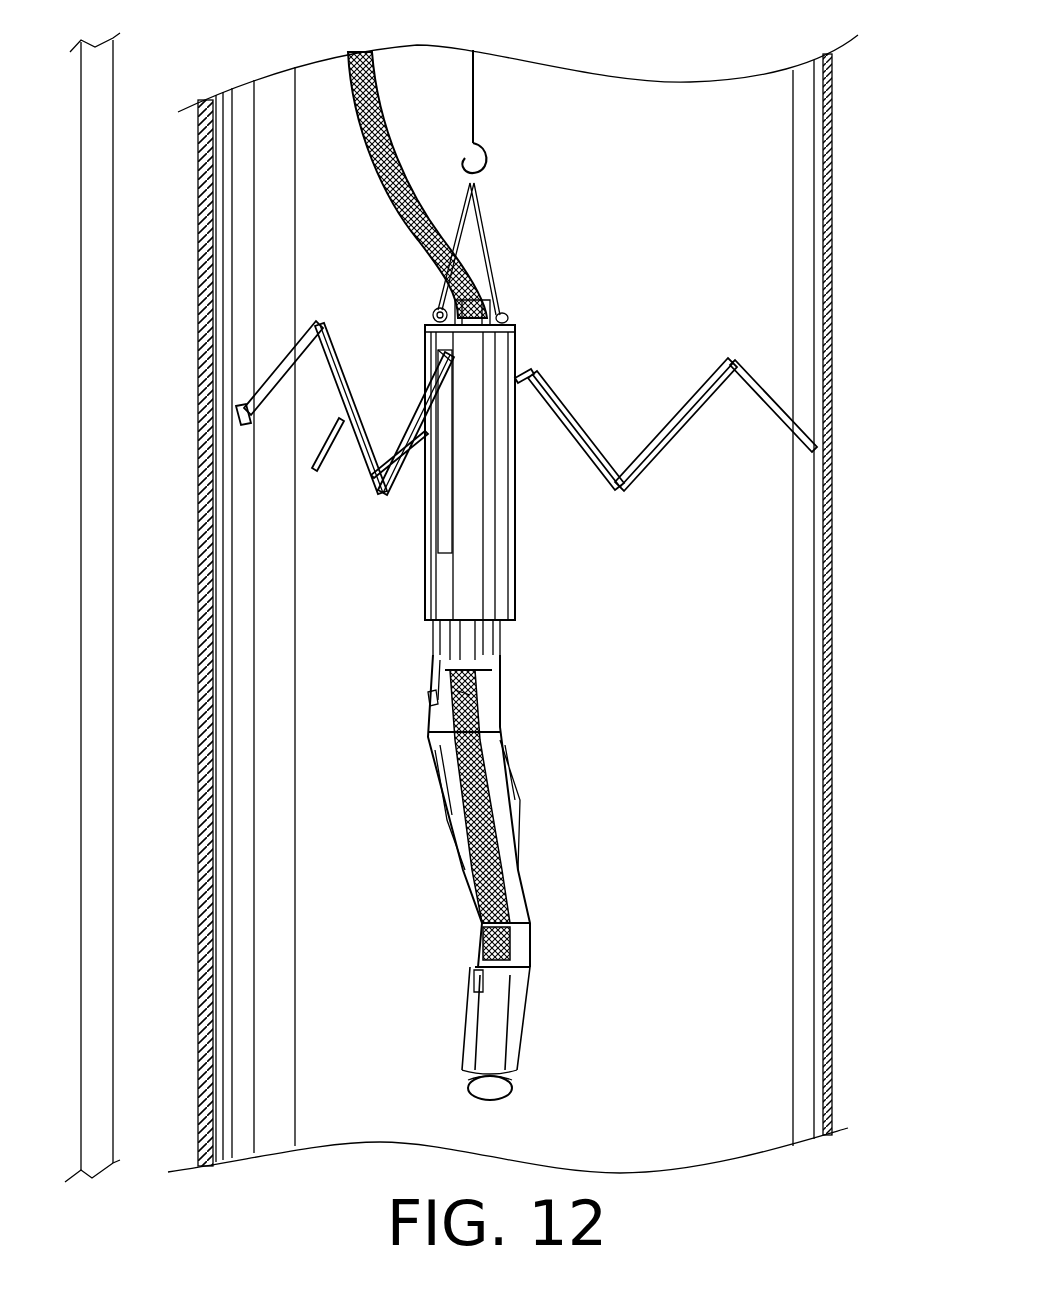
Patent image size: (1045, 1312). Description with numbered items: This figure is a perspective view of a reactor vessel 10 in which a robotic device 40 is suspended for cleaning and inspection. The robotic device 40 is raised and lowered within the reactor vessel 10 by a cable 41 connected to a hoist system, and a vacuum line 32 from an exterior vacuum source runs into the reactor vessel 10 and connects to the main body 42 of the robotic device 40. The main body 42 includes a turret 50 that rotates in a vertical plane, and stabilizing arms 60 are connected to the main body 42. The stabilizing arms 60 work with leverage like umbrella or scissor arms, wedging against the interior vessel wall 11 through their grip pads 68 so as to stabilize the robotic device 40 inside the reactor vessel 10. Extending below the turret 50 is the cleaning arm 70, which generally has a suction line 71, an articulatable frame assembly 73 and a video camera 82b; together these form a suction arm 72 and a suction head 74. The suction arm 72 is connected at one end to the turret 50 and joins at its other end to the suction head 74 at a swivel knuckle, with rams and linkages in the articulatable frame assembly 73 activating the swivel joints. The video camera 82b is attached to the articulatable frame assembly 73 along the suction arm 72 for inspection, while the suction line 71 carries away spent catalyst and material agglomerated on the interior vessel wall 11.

The reactor vessel 10 is at (832, 167).
The interior vessel wall 11 is at (817, 675).
The vacuum line 32 is at (112, 420).
The robotic device 40 is at (575, 297).
The cable 41 is at (475, 100).
The main body 42 is at (392, 535).
The turret 50 is at (533, 588).
The stabilizing arms 60 is at (673, 477).
The grip pads 68 is at (240, 413).
The cleaning arm 70 is at (539, 872).
The suction line 71 is at (507, 890).
The suction arm 72 is at (433, 698).
The articulatable frame assembly 73 is at (512, 807).
The suction head 74 is at (508, 943).
The video camera 82b is at (478, 975).